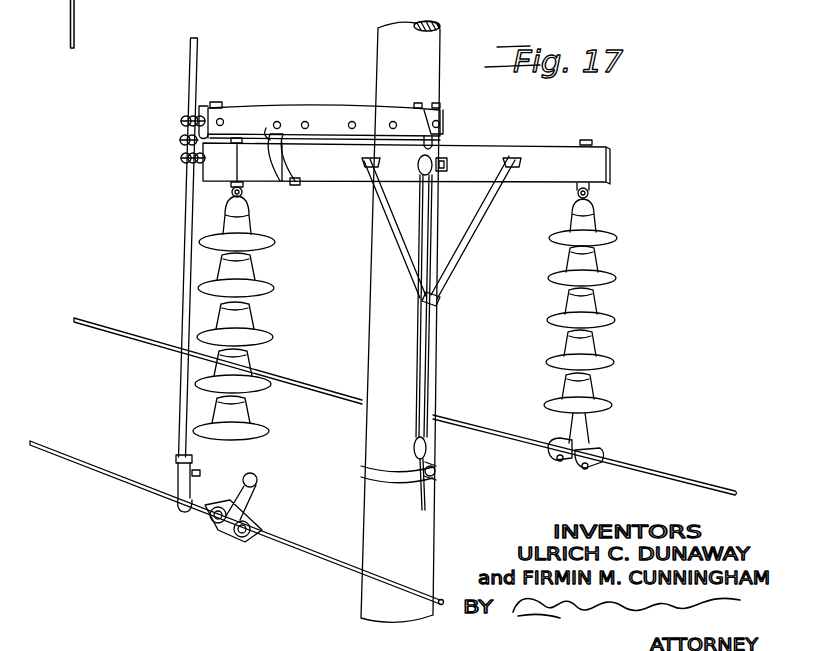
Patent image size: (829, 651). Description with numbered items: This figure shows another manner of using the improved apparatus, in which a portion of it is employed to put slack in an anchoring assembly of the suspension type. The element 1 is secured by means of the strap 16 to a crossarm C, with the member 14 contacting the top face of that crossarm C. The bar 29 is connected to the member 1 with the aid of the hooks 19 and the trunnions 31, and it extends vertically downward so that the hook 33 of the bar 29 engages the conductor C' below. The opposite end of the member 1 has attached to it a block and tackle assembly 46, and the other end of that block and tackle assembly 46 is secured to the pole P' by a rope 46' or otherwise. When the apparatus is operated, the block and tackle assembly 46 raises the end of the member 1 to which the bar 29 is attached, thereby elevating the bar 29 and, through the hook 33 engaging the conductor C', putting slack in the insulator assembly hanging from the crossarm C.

The element 1 is at (300, 108).
The member 14 is at (268, 133).
The strap 16 is at (290, 180).
The hooks 19 is at (183, 146).
The bar 29 is at (188, 205).
The trunnions 31 is at (203, 128).
The hook 33 is at (180, 505).
The block and tackle assembly 46 is at (445, 332).
The rope 46' is at (379, 465).
The crossarm C is at (406, 177).
The conductor C' is at (237, 523).
The pole P' is at (384, 321).